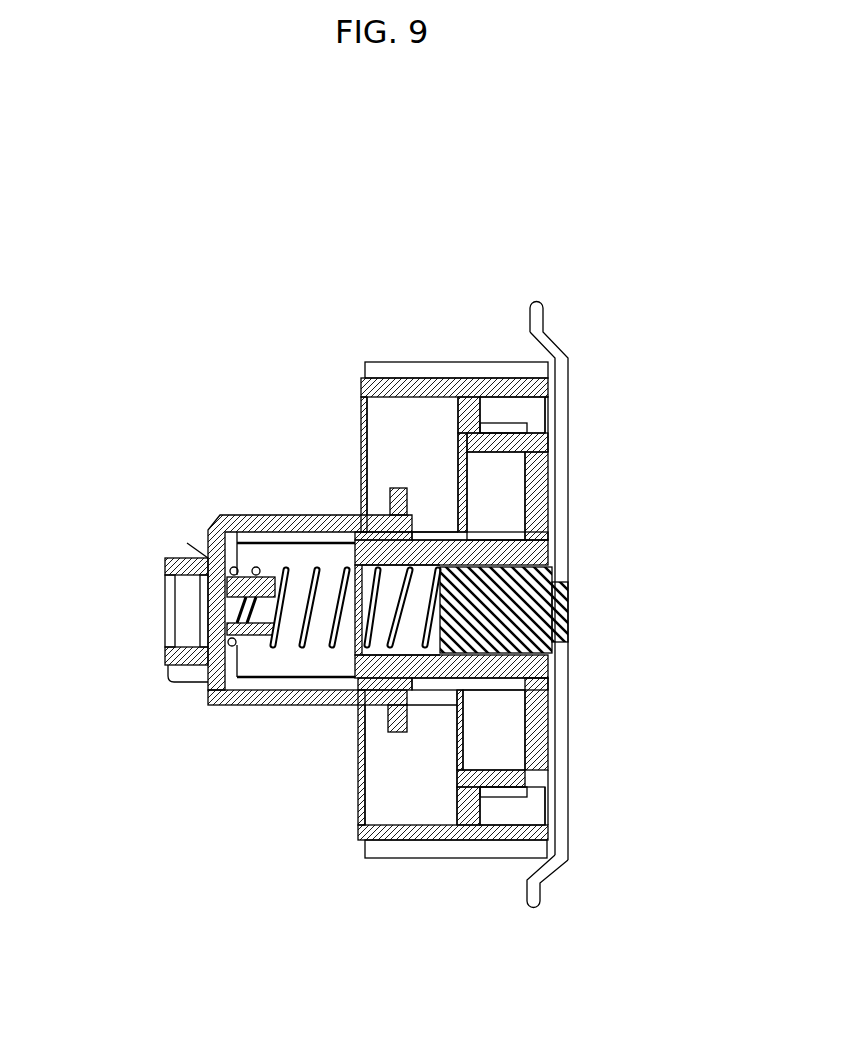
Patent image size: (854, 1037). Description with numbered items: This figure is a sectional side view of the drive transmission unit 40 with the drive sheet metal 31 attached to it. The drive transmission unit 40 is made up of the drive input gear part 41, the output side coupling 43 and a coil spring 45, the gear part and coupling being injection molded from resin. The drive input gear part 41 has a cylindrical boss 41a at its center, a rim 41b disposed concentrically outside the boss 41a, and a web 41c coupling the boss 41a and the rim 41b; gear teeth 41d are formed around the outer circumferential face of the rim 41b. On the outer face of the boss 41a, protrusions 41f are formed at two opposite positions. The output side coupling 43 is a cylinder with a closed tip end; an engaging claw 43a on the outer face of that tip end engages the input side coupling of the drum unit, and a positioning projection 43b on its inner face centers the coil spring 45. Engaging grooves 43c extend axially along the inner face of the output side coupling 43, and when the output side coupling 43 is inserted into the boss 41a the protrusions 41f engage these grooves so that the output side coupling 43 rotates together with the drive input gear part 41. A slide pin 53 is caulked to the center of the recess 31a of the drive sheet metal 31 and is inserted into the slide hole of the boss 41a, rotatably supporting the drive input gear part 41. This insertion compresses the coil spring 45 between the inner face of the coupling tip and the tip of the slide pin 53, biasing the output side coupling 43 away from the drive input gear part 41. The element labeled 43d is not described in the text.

The drive sheet metal 31 is at (565, 393).
The recess 31a is at (530, 868).
The drive transmission unit 40 is at (203, 420).
The drive input gear part 41 is at (390, 868).
The cylindrical boss 41a is at (440, 540).
The rim 41b is at (478, 392).
The web 41c is at (522, 738).
The gear teeth 41d is at (400, 374).
The protrusions 41f is at (388, 712).
The output side coupling 43 is at (228, 733).
The engaging claw 43a is at (164, 592).
The positioning projection 43b is at (238, 576).
The engaging grooves 43c is at (305, 703).
The pressing member projection 43d is at (396, 490).
The coil spring 45 is at (307, 572).
The slide pin 53 is at (560, 608).